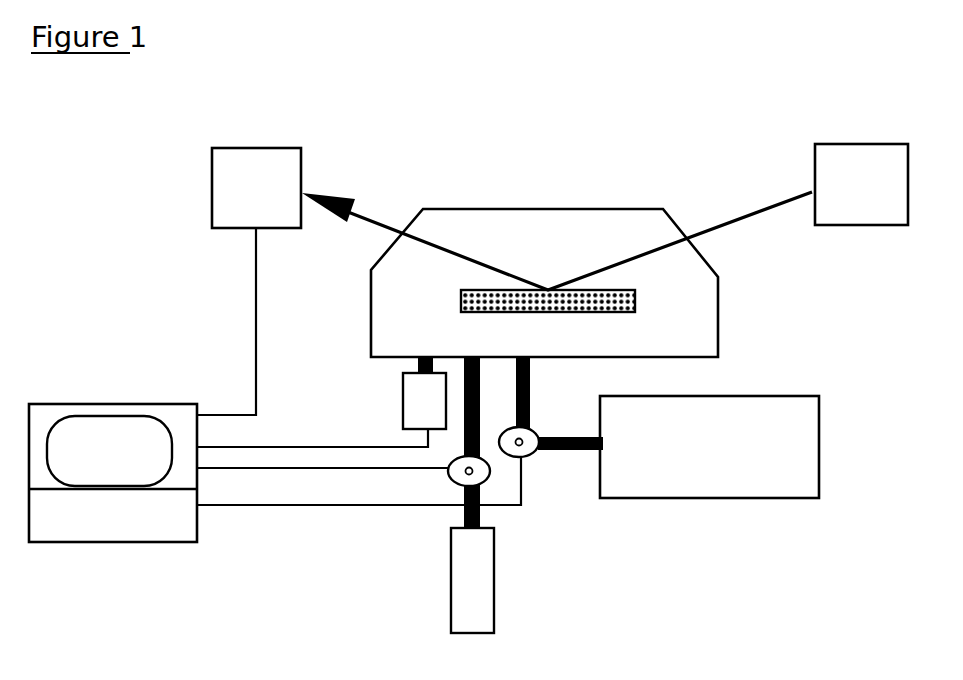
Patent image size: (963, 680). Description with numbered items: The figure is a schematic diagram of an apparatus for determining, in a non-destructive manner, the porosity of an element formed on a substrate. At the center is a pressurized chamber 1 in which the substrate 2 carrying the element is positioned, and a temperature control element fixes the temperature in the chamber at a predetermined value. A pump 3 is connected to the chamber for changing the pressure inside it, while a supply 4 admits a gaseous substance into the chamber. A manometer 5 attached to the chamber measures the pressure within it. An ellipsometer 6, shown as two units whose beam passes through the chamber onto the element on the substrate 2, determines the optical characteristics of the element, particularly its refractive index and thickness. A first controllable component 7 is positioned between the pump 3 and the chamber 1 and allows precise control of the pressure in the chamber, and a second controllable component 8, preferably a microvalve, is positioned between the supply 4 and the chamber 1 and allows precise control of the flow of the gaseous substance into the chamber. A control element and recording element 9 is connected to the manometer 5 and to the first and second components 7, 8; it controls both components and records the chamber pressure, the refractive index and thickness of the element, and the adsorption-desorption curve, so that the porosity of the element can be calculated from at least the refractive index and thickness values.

The pressurized chamber 1 is at (715, 311).
The substrate 2 is at (462, 298).
The pump 3 is at (683, 485).
The supply 4 is at (466, 591).
The manometer 5 is at (427, 391).
The ellipsometer 6 is at (836, 186).
The first controllable component 7 is at (528, 455).
The second controllable component 8 is at (455, 479).
The control element and recording element 9 is at (75, 520).